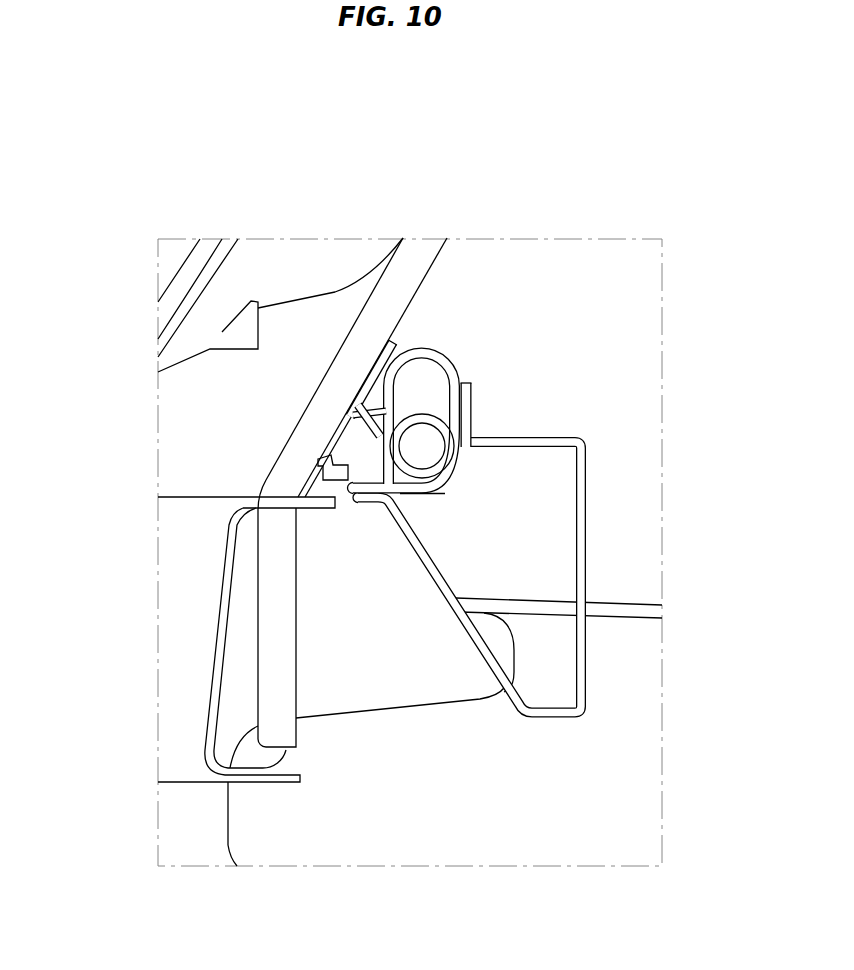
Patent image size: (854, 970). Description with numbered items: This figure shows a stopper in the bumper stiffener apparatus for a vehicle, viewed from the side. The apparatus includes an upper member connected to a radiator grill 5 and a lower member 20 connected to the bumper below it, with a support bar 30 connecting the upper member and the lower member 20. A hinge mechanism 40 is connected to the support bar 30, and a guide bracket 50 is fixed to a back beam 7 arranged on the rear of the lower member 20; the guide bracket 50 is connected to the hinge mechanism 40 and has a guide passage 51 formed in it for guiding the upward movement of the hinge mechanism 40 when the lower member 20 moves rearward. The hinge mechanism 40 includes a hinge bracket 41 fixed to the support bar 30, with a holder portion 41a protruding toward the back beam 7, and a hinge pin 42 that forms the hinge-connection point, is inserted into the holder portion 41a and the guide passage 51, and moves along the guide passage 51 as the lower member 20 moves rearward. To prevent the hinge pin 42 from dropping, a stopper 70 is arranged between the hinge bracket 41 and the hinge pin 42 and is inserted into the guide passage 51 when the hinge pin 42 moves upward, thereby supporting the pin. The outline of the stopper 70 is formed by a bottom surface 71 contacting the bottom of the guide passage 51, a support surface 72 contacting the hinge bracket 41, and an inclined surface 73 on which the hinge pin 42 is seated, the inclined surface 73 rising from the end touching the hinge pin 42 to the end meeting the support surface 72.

The radiator grill 5 is at (273, 255).
The back beam 7 is at (427, 815).
The lower member 20 is at (178, 660).
The support bar 30 is at (300, 388).
The hinge mechanism 40 is at (461, 453).
The hinge bracket 41 is at (404, 350).
The holder portion 41a is at (440, 405).
The hinge pin 42 is at (440, 440).
The guide bracket 50 is at (582, 483).
The guide passage 51 is at (430, 358).
The stopper 70 is at (323, 468).
The bottom surface 71 is at (240, 510).
The support surface 72 is at (358, 410).
The inclined surface 73 is at (378, 352).